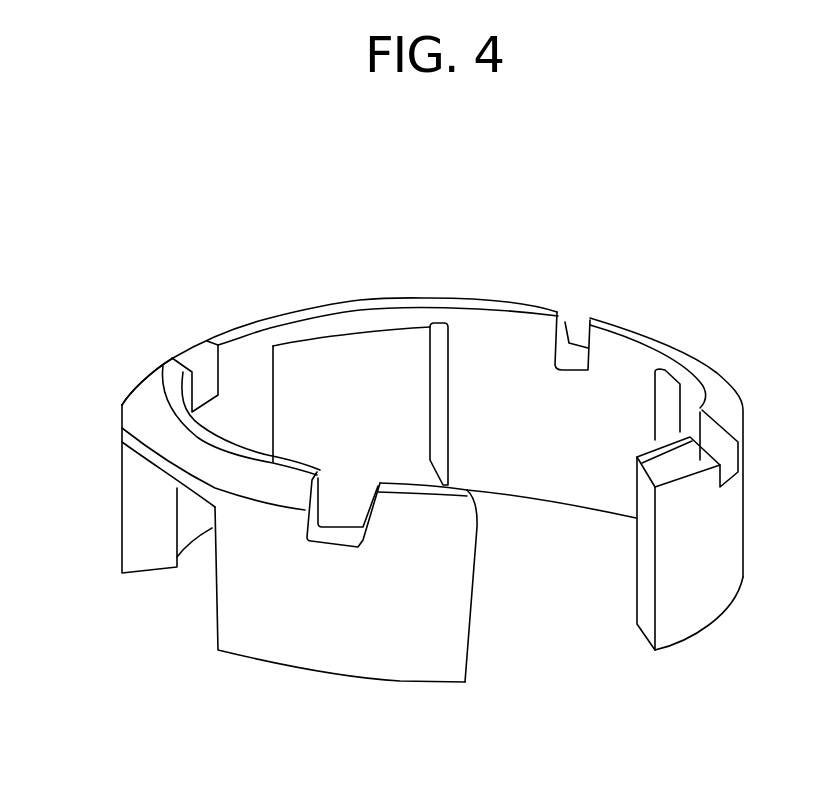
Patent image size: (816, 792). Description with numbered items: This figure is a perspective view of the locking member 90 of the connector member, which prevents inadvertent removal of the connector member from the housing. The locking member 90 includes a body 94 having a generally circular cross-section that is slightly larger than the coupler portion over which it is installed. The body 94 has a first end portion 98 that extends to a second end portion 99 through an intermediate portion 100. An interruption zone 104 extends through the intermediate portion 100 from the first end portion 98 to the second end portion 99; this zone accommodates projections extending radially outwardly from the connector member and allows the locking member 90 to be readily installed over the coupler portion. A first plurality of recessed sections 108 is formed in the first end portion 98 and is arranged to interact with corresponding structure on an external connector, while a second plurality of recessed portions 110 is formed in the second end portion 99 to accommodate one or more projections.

The locking member 90 is at (192, 227).
The body 94 is at (139, 391).
The first end portion 98 is at (214, 434).
The second end portion 99 is at (553, 503).
The intermediate portion 100 is at (580, 425).
The interruption zone 104 is at (637, 585).
The first plurality of recessed sections 108 is at (565, 352).
The second plurality of recessed portions 110 is at (150, 556).